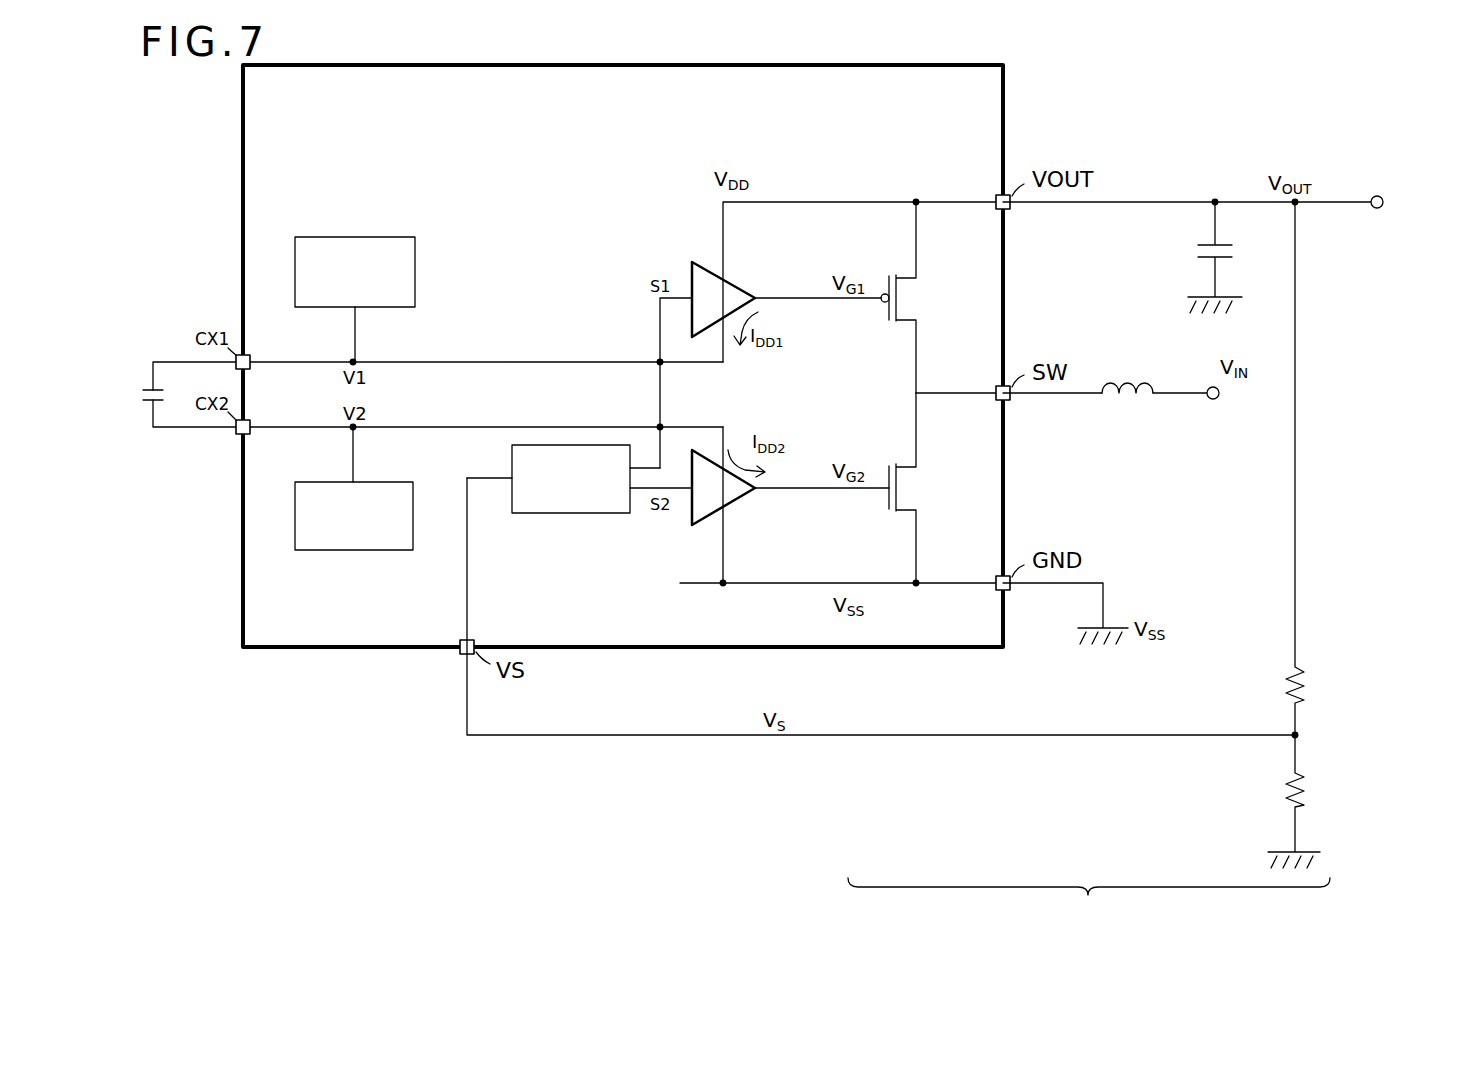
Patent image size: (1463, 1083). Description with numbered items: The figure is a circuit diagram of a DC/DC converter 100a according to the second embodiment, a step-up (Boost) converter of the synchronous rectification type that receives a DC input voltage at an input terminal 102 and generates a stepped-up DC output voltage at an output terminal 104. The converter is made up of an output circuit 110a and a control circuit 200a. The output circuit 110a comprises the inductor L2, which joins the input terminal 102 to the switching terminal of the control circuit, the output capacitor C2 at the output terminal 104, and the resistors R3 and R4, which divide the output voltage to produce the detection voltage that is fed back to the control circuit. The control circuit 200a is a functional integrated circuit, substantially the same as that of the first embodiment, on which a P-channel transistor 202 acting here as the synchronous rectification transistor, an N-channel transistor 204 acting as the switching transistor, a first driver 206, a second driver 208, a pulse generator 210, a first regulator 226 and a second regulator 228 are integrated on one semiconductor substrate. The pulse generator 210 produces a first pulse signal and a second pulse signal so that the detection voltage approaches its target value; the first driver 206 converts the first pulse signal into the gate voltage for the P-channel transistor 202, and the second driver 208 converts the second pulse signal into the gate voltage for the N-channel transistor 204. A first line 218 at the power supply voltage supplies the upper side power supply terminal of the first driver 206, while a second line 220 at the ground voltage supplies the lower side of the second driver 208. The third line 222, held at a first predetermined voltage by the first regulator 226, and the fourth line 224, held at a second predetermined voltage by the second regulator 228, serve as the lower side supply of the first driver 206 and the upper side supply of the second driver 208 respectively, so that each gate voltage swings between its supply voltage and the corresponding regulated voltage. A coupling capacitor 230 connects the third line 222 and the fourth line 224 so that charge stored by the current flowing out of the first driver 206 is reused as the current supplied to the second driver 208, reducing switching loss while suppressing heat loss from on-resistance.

The DC/DC converter 100a is at (655, 900).
The control circuit 200a is at (355, 650).
The output circuit 110a is at (1089, 904).
The input terminal 102 is at (1220, 397).
The output terminal 104 is at (1384, 206).
The P-channel transistor 202 is at (918, 292).
The N-channel transistor 204 is at (918, 482).
The first driver 206 is at (736, 286).
The second driver 208 is at (736, 502).
The pulse generator 210 is at (572, 513).
The first line 218 is at (820, 202).
The second line 220 is at (822, 583).
The third line 222 is at (510, 362).
The fourth line 224 is at (510, 427).
The first regulator 226 is at (355, 237).
The second regulator 228 is at (353, 550).
The coupling capacitor 230 is at (143, 396).
The output capacitor C2 is at (1196, 251).
The inductor L2 is at (1152, 382).
The resistor R3 is at (1306, 686).
The resistor R4 is at (1306, 792).